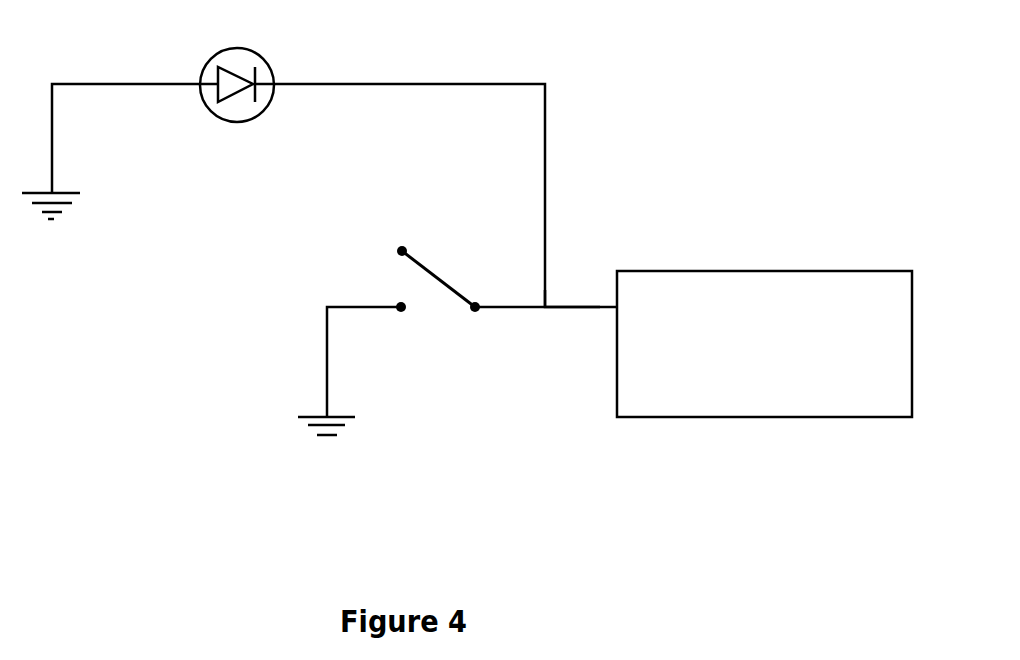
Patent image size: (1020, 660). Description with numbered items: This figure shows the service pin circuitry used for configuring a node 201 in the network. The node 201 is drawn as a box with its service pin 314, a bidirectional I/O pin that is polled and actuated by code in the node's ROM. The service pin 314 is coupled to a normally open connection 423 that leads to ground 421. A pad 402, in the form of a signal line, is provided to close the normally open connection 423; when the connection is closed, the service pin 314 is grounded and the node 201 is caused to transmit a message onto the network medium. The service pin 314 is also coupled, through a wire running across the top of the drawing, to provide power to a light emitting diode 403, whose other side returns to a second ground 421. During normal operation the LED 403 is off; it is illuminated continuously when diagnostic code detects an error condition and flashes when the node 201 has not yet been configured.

The light emitting diode 403 is at (242, 124).
The ground 421 is at (48, 221).
The pad 402 is at (434, 274).
The normally open connection 423 is at (432, 309).
The service pin 314 is at (582, 302).
The node 201 is at (870, 415).